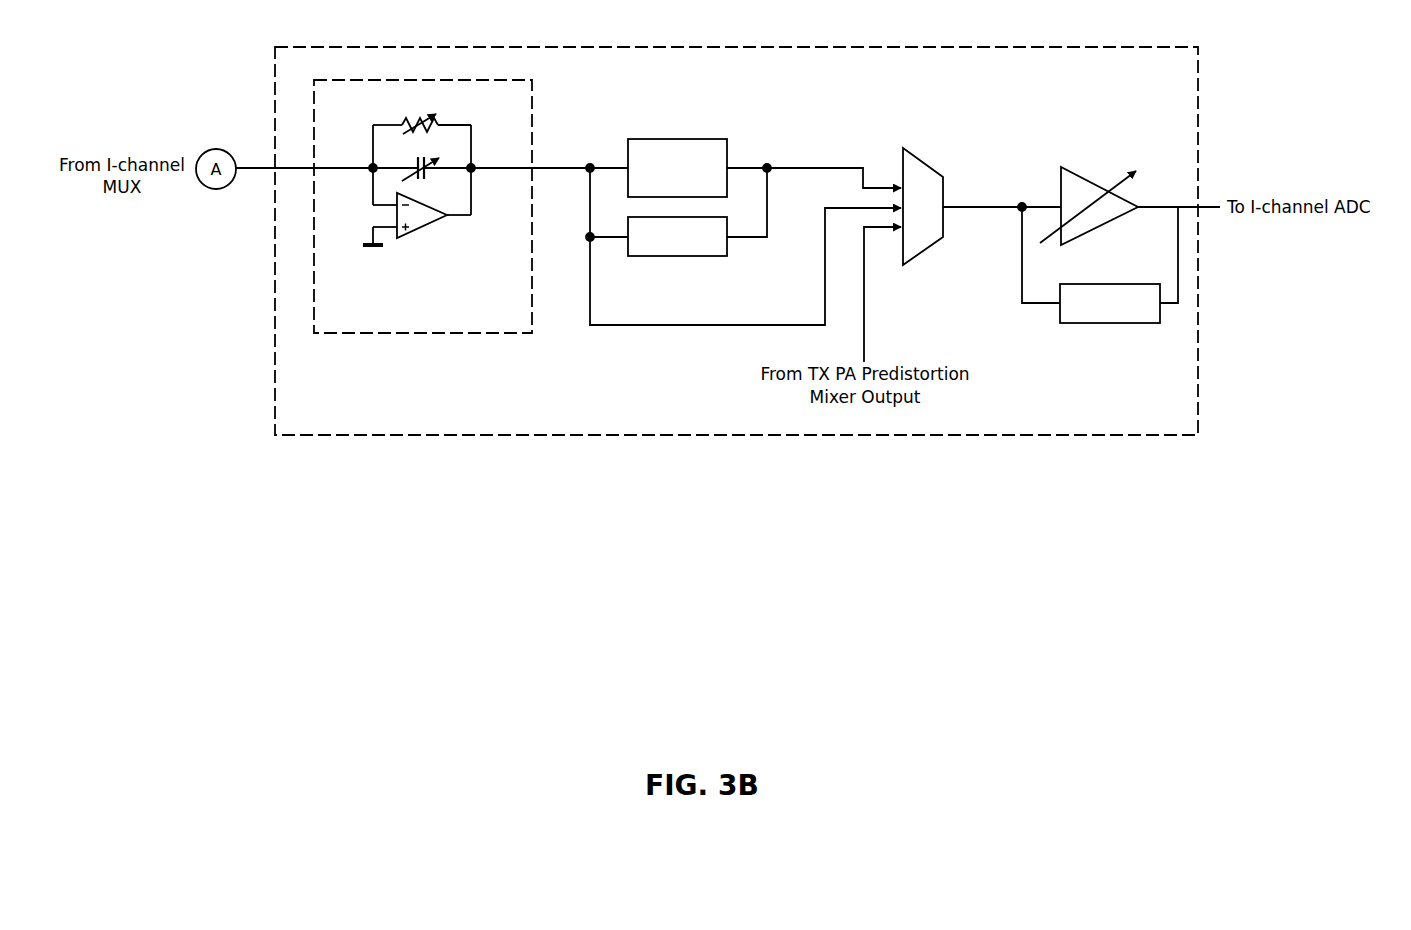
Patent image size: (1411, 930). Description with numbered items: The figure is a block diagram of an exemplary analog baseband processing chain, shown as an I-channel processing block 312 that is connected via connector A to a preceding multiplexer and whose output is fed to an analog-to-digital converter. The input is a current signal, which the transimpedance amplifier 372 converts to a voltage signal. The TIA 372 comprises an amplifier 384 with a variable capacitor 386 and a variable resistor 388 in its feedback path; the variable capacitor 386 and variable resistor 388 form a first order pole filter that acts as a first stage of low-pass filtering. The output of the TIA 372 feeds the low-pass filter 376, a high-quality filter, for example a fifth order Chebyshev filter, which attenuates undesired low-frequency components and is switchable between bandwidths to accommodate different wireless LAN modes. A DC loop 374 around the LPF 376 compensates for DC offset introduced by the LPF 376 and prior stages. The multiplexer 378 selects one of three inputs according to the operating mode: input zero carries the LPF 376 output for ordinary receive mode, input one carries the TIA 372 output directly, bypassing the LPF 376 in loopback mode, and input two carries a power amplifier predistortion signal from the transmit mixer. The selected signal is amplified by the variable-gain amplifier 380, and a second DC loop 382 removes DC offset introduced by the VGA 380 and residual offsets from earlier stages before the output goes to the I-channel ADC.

The I-channel processing block 312 is at (877, 46).
The transimpedance amplifier 372 is at (350, 334).
The DC loop 374 is at (668, 257).
The low-pass filter 376 is at (688, 138).
The multiplexer 378 is at (927, 163).
The variable-gain amplifier 380 is at (1080, 173).
The DC loop 382 is at (1073, 283).
The amplifier 384 is at (417, 233).
The variable capacitor 386 is at (413, 182).
The variable resistor 388 is at (423, 119).